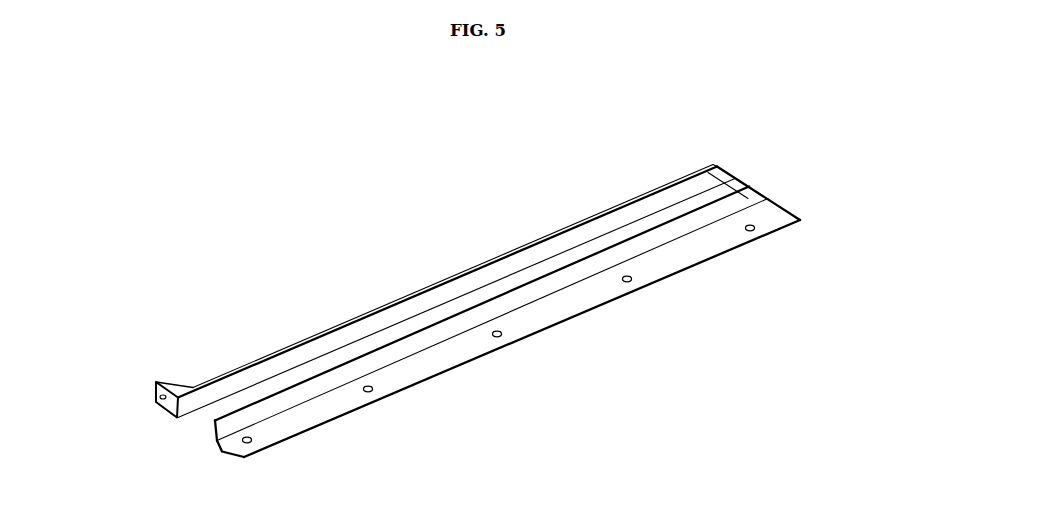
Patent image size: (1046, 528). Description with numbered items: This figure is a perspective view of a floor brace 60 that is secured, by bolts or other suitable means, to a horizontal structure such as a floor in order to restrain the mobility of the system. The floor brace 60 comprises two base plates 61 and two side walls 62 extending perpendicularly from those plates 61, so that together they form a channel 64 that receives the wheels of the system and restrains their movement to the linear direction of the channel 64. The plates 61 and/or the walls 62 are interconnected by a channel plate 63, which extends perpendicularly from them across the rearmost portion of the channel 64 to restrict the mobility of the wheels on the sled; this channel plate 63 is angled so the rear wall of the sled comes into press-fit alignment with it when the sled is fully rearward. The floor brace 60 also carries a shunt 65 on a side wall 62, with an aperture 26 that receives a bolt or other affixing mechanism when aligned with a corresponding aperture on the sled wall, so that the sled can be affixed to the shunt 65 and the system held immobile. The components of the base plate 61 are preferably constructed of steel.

The floor brace 60 is at (385, 222).
The base plate 61 is at (567, 304).
The side wall 62 is at (615, 218).
The channel plate 63 is at (752, 186).
The channel 64 is at (240, 393).
The shunt 65 is at (172, 409).
The aperture 26 is at (155, 383).